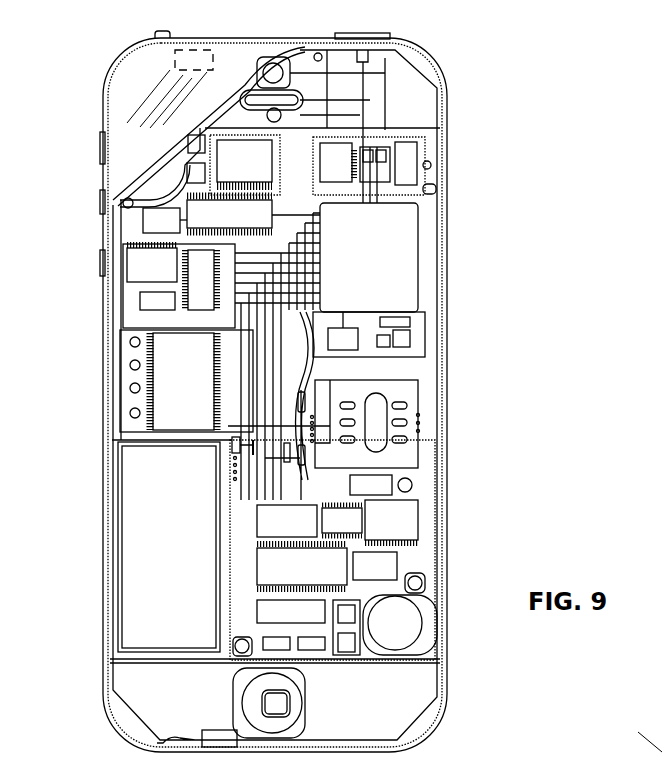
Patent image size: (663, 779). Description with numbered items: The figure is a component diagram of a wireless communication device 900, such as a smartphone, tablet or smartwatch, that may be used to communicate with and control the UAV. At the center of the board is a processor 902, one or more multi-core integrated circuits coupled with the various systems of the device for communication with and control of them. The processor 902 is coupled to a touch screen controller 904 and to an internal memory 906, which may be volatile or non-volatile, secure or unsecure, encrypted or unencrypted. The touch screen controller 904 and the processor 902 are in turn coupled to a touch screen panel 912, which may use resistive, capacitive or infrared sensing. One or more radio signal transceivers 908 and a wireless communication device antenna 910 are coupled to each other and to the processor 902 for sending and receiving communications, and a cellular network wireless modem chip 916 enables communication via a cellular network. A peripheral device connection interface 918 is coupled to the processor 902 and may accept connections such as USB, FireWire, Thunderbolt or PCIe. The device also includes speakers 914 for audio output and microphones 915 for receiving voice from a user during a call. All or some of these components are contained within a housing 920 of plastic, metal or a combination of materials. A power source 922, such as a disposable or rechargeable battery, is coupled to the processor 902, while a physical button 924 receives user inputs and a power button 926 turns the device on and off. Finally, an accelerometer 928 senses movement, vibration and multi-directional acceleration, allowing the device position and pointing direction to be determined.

The wireless communication device 900 is at (550, 82).
The processor 902 is at (383, 266).
The touch screen controller 904 is at (262, 171).
The internal memory 906 is at (246, 225).
The radio signal transceivers 908 is at (377, 152).
The wireless communication device antenna 910 is at (428, 168).
The touch screen panel 912 is at (128, 96).
The speakers 914 is at (243, 88).
The microphones 915 is at (187, 52).
The cellular network wireless modem chip 916 is at (316, 576).
The peripheral device connection interface 918 is at (299, 621).
The housing 920 is at (447, 668).
The power source 922 is at (184, 556).
The physical button 924 is at (290, 712).
The power button 926 is at (360, 34).
The accelerometer 928 is at (245, 450).